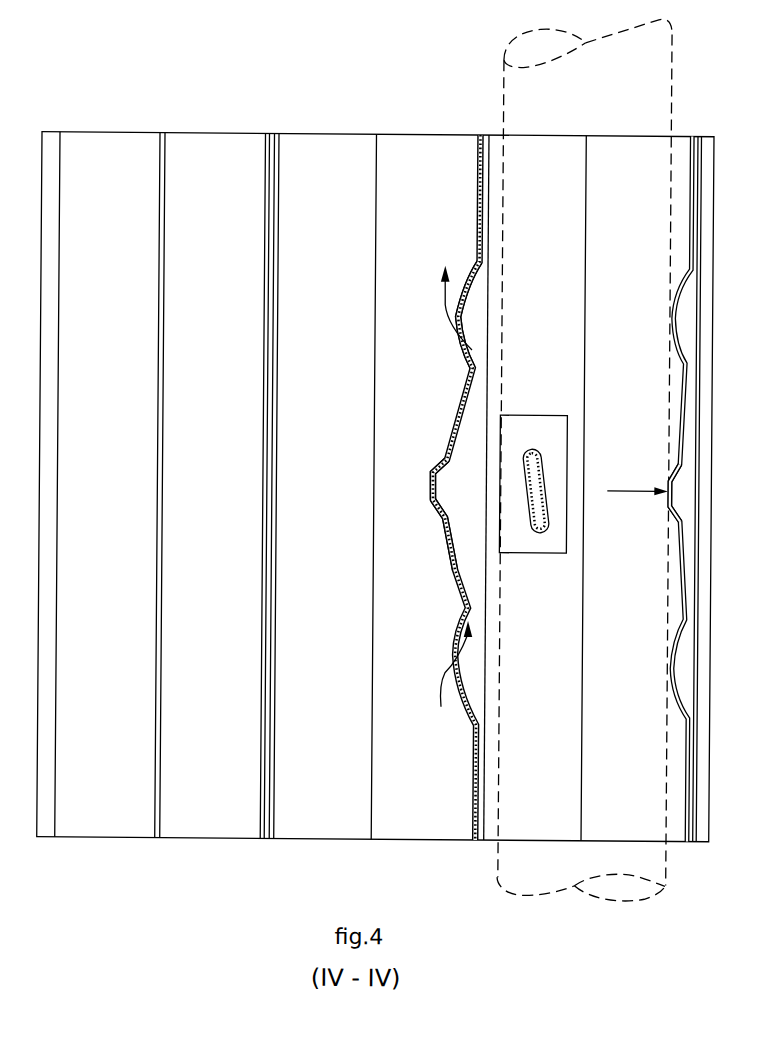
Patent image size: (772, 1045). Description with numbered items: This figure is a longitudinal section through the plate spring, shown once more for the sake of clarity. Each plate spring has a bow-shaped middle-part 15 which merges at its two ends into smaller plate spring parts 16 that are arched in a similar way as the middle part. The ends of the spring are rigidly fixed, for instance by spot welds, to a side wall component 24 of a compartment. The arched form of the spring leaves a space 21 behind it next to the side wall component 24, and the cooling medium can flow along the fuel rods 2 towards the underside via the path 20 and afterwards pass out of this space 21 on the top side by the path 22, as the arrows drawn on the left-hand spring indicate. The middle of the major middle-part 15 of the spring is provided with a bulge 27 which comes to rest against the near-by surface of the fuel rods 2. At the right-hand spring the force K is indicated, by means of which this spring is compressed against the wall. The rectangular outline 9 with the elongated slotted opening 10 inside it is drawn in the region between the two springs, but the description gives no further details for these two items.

The fuel rod 2 is at (536, 802).
The opening frame 9 is at (548, 547).
The slot 10 is at (544, 458).
The bow-shaped middle-part 15 is at (455, 432).
The smaller plate spring part 16 is at (467, 292).
The underside flow path 20 is at (445, 692).
The space 21 is at (455, 500).
The top side flow path 22 is at (446, 305).
The side wall component 24 is at (490, 742).
The bulge 27 is at (436, 495).
The force K is at (637, 481).